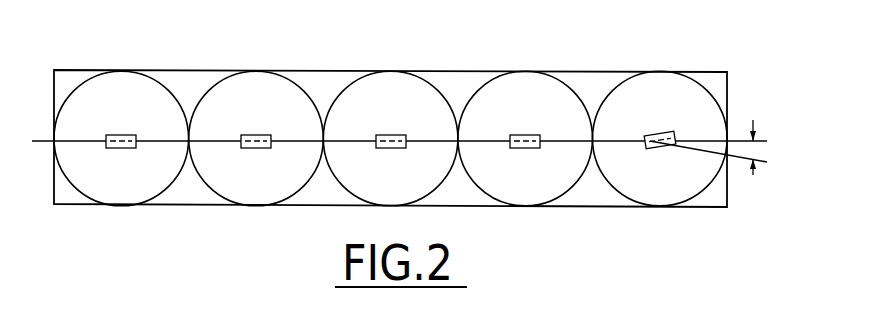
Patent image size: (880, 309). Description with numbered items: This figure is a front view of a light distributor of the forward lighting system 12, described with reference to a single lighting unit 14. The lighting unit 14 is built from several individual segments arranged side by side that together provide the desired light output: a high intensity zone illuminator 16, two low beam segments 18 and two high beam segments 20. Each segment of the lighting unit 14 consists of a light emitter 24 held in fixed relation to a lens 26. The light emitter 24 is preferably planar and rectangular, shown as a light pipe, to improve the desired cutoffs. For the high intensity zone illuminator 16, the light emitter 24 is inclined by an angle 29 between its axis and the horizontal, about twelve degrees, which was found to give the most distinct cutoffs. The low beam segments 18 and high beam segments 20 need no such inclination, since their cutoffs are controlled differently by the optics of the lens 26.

The forward lighting system 12 is at (483, 72).
The lighting unit 14 is at (661, 45).
The high intensity zone illuminator 16 is at (703, 83).
The low beam segment 18 is at (82, 80).
The high beam segment 20 is at (348, 87).
The light emitter 24 is at (390, 150).
The lens 26 is at (160, 83).
The angle 29 is at (763, 150).